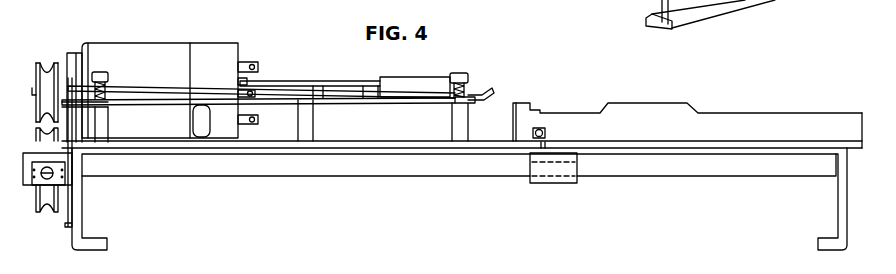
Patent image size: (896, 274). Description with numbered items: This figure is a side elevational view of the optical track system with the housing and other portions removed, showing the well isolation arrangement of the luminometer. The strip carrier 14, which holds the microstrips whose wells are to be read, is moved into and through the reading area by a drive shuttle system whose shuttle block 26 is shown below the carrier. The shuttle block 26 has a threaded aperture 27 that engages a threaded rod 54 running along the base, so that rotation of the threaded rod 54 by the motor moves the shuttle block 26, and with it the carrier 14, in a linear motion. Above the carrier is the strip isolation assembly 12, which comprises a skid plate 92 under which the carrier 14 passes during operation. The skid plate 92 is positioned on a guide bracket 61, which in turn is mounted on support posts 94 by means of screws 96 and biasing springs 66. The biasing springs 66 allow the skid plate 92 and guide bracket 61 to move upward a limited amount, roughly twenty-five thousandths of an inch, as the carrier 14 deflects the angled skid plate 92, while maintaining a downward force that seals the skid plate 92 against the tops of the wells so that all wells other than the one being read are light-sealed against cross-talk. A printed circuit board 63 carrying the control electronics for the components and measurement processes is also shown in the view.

The strip isolation assembly 12 is at (325, 78).
The strip carrier 14 is at (661, 103).
The shuttle block 26 is at (540, 183).
The threaded aperture 27 is at (551, 163).
The threaded rod 54 is at (336, 180).
The guide bracket 61 is at (413, 95).
The printed circuit board 63 is at (297, 86).
The biasing springs 66 is at (102, 100).
The skid plate 92 is at (495, 89).
The support posts 94 is at (100, 142).
The screws 96 is at (99, 72).